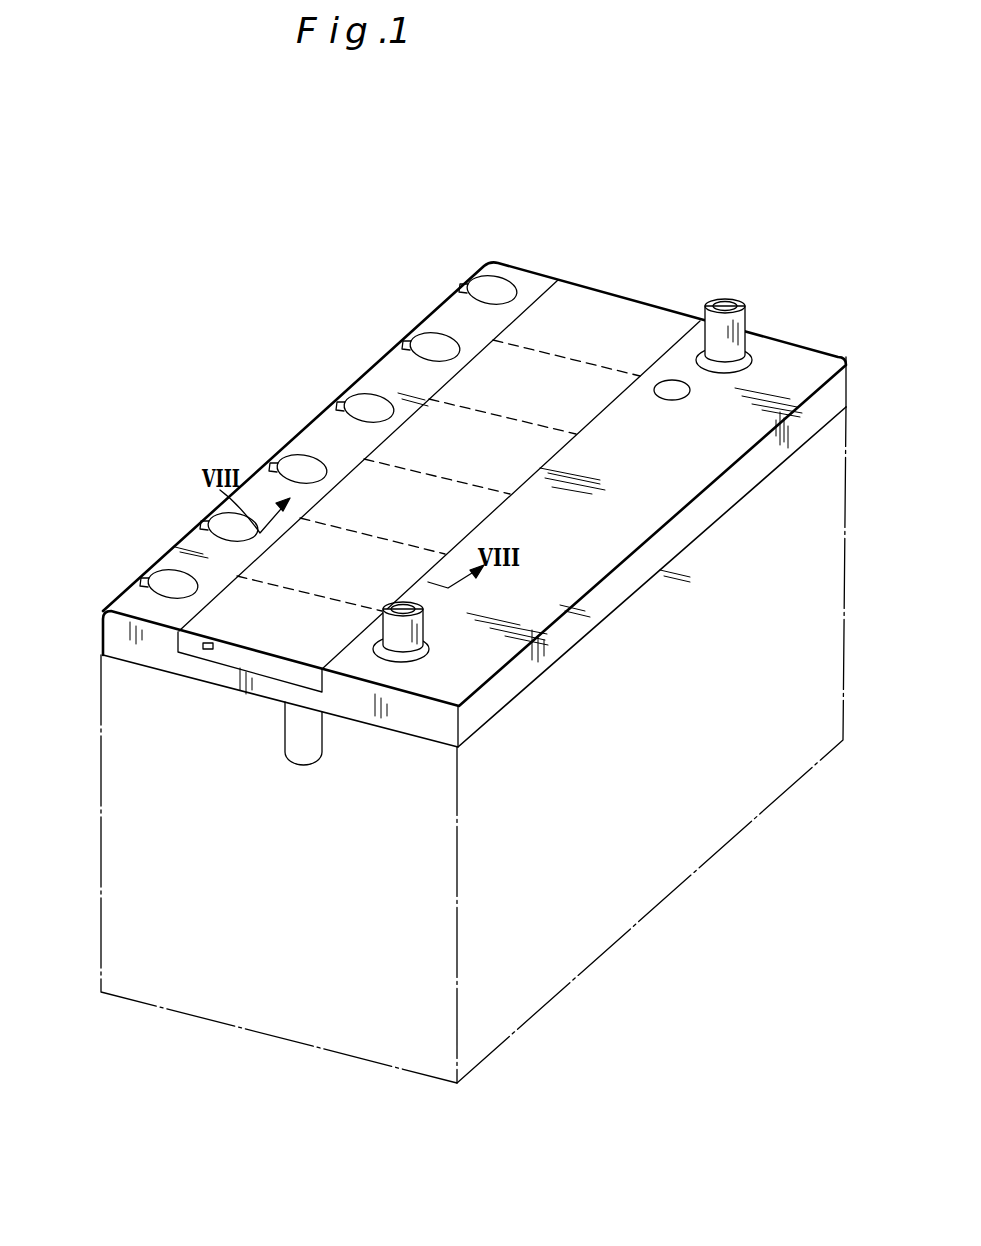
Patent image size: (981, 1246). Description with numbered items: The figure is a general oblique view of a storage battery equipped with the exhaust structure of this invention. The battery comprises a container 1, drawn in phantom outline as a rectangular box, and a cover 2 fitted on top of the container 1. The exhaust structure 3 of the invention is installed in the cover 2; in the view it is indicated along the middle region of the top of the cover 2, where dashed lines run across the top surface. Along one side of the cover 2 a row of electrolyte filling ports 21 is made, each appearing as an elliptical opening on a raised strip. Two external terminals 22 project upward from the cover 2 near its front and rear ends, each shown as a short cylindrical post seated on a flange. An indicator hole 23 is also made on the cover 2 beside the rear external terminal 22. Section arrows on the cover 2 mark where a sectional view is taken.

The container 1 is at (120, 796).
The cover 2 is at (812, 338).
The exhaust structure 3 is at (618, 330).
The electrolyte filling port 21 is at (300, 466).
The external terminal 22 is at (727, 338).
The indicator hole 23 is at (680, 400).